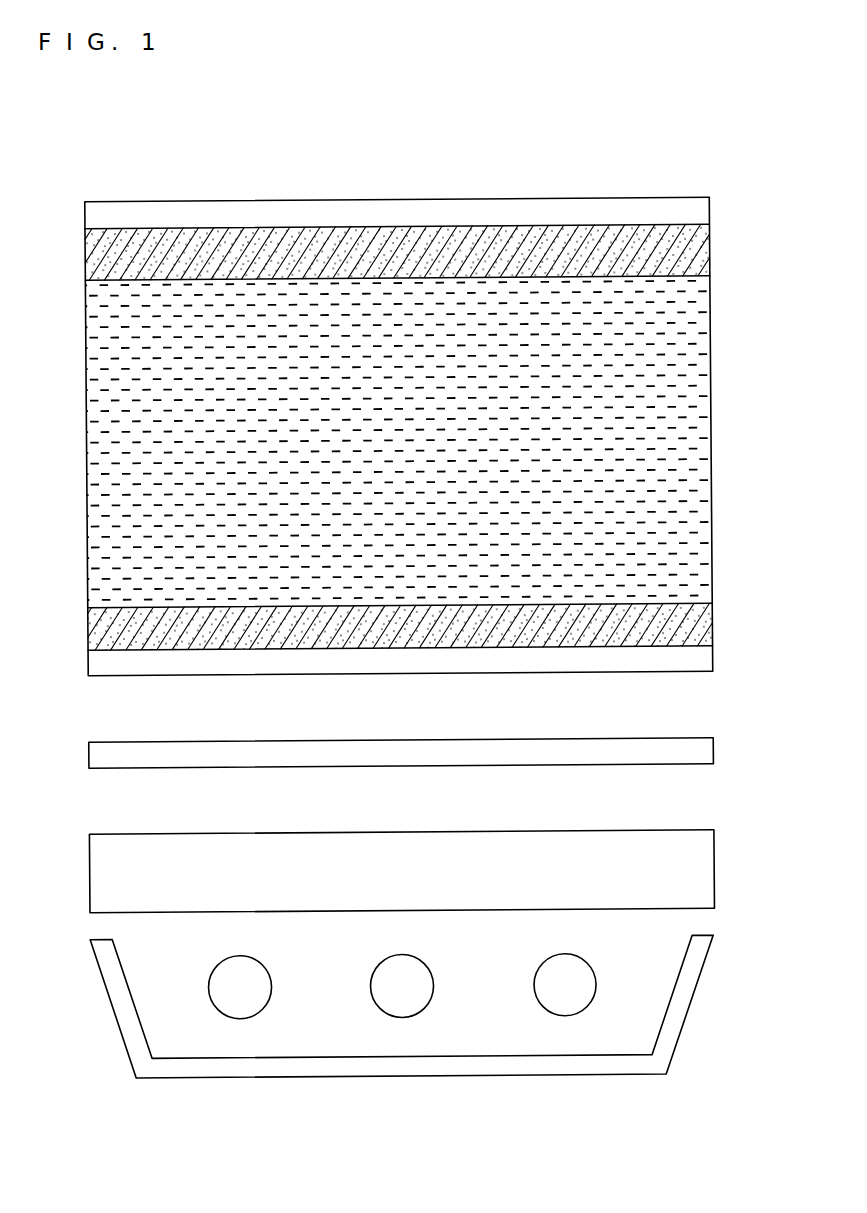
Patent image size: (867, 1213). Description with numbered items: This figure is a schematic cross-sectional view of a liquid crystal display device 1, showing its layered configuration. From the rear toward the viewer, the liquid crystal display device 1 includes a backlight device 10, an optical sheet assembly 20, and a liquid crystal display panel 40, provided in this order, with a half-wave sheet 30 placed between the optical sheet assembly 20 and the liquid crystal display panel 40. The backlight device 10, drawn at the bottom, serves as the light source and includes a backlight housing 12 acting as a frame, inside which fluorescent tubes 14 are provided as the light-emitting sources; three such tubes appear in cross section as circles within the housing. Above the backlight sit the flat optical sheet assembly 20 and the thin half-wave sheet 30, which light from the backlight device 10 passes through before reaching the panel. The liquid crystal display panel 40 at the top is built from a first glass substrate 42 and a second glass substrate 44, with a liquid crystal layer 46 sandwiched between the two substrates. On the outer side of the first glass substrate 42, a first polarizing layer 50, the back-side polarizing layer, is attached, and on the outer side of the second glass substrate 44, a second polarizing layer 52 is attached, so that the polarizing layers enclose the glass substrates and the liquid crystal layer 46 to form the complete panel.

The liquid crystal display device 1 is at (174, 165).
The backlight device 10 is at (727, 970).
The backlight housing 12 is at (677, 1021).
The fluorescent tube 14 is at (565, 1005).
The optical sheet assembly 20 is at (727, 870).
The λ/2 sheet 30 is at (702, 752).
The liquid crystal display panel 40 is at (750, 342).
The first glass substrate 42 is at (706, 623).
The second glass substrate 44 is at (703, 249).
The liquid crystal layer 46 is at (700, 445).
The first polarizing layer 50 is at (700, 657).
The second polarizing layer 52 is at (697, 214).